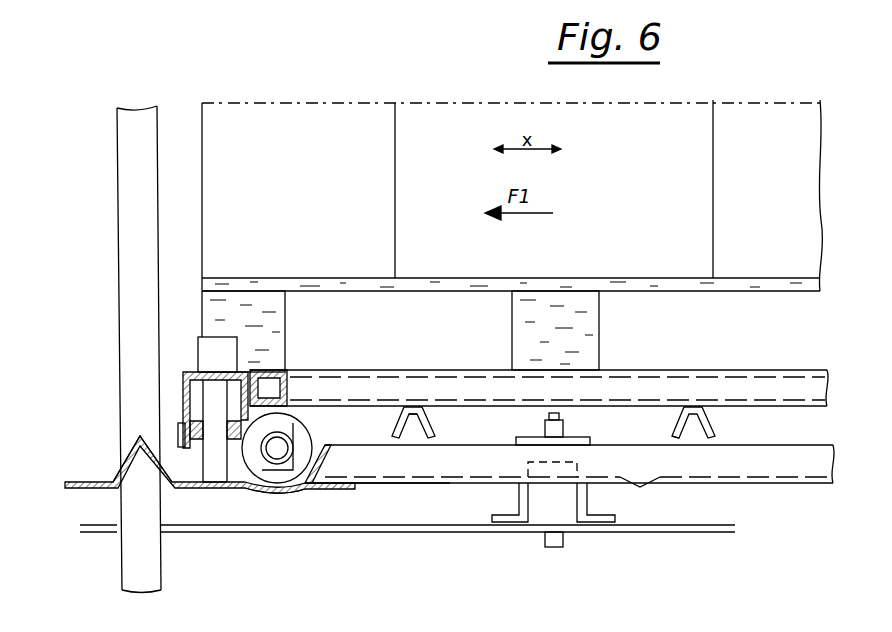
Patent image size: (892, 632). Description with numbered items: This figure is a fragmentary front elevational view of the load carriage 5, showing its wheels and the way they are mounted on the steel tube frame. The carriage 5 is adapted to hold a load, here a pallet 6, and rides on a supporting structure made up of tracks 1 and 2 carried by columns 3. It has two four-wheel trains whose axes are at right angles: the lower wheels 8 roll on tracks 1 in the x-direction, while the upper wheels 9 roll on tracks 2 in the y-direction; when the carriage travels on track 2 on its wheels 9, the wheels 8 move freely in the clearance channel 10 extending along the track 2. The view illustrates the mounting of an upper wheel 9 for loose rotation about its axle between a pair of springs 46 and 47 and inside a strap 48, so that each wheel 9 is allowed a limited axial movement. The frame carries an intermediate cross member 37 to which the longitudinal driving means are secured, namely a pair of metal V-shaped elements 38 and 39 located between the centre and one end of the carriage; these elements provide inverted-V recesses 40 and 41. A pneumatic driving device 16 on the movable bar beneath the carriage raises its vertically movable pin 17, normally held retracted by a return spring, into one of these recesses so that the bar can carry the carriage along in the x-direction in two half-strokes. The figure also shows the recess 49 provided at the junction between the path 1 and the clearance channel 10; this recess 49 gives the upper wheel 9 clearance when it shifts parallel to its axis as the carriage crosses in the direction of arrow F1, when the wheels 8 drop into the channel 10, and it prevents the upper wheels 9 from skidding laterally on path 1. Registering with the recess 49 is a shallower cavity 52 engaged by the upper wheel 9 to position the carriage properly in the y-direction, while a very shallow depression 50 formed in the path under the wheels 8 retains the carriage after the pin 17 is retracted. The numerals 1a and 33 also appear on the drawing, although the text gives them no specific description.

The track 1 is at (468, 457).
The bottom flange of lower rail 1a is at (343, 486).
The track 2 is at (93, 481).
The column 3 is at (136, 125).
The carriage 5 is at (268, 390).
The pallet 6 is at (580, 338).
The wheels 8 is at (273, 490).
The wheels 9 is at (225, 488).
The clearance channel 10 is at (310, 484).
The pneumatic driving device 16 is at (547, 502).
The vertically movable pin 17 is at (555, 425).
The bead of floor sheet 33 is at (134, 438).
The intermediate cross member 37 is at (688, 396).
The V-shaped element 38 is at (397, 438).
The V-shaped element 39 is at (678, 436).
The inverted-V recess 40 is at (417, 433).
The inverted-V recess 41 is at (695, 425).
The spring 46 is at (183, 455).
The spring 47 is at (243, 485).
The strap 48 is at (186, 405).
The recess 49 is at (336, 489).
The shallow depression 50 is at (640, 488).
The shallower cavity 52 is at (205, 470).